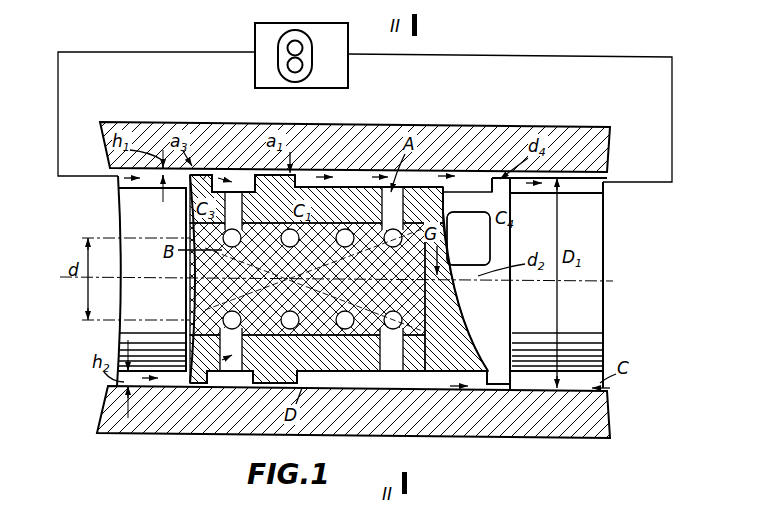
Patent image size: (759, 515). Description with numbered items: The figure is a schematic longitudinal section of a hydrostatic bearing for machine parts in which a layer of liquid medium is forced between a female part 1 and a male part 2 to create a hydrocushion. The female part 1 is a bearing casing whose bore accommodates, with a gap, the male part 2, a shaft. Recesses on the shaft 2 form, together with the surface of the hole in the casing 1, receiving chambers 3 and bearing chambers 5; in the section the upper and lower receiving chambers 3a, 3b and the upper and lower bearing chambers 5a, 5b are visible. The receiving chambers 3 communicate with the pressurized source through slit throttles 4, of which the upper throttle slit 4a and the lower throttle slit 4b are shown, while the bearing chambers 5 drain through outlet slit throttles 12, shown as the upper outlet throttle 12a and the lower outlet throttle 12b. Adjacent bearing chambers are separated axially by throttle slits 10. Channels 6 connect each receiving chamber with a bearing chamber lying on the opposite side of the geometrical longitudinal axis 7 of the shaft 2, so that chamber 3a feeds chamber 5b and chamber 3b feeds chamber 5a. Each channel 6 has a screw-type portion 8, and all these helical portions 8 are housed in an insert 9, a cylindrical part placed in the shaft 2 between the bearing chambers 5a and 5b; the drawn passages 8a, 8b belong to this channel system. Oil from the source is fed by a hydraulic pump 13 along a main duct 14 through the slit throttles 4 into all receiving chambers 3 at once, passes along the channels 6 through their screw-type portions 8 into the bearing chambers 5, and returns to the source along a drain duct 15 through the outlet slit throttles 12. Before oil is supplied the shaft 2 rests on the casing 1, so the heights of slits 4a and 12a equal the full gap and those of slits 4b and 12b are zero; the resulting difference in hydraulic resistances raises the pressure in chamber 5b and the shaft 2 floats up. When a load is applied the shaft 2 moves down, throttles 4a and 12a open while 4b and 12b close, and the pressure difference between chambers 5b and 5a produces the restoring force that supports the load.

The female part 1 is at (602, 132).
The male part 2 is at (596, 227).
The receiving chambers 3 is at (256, 388).
The receiving chamber 3a is at (246, 173).
The receiving chamber 3b is at (226, 388).
The slit throttles 4 is at (200, 389).
The throttle slit 4a is at (206, 172).
The slit throttle 4b is at (193, 387).
The bearing chambers 5 is at (479, 238).
The bearing chamber 5a is at (356, 178).
The bearing chamber 5b is at (352, 388).
The channels 6 is at (221, 359).
The geometrical longitudinal axis 7 is at (586, 284).
The screw-type portion 8 is at (346, 23).
The upper feed holes 8a is at (244, 258).
The lower feed holes 8b is at (256, 291).
The insert 9 is at (456, 297).
The throttle slits 10 is at (316, 199).
The outlet slit throttles 12 is at (503, 388).
The outlet throttle 12a is at (495, 176).
The outlet throttle 12b is at (490, 388).
The hydraulic pump 13 is at (297, 32).
The main duct 14 is at (168, 53).
The drain duct 15 is at (516, 57).